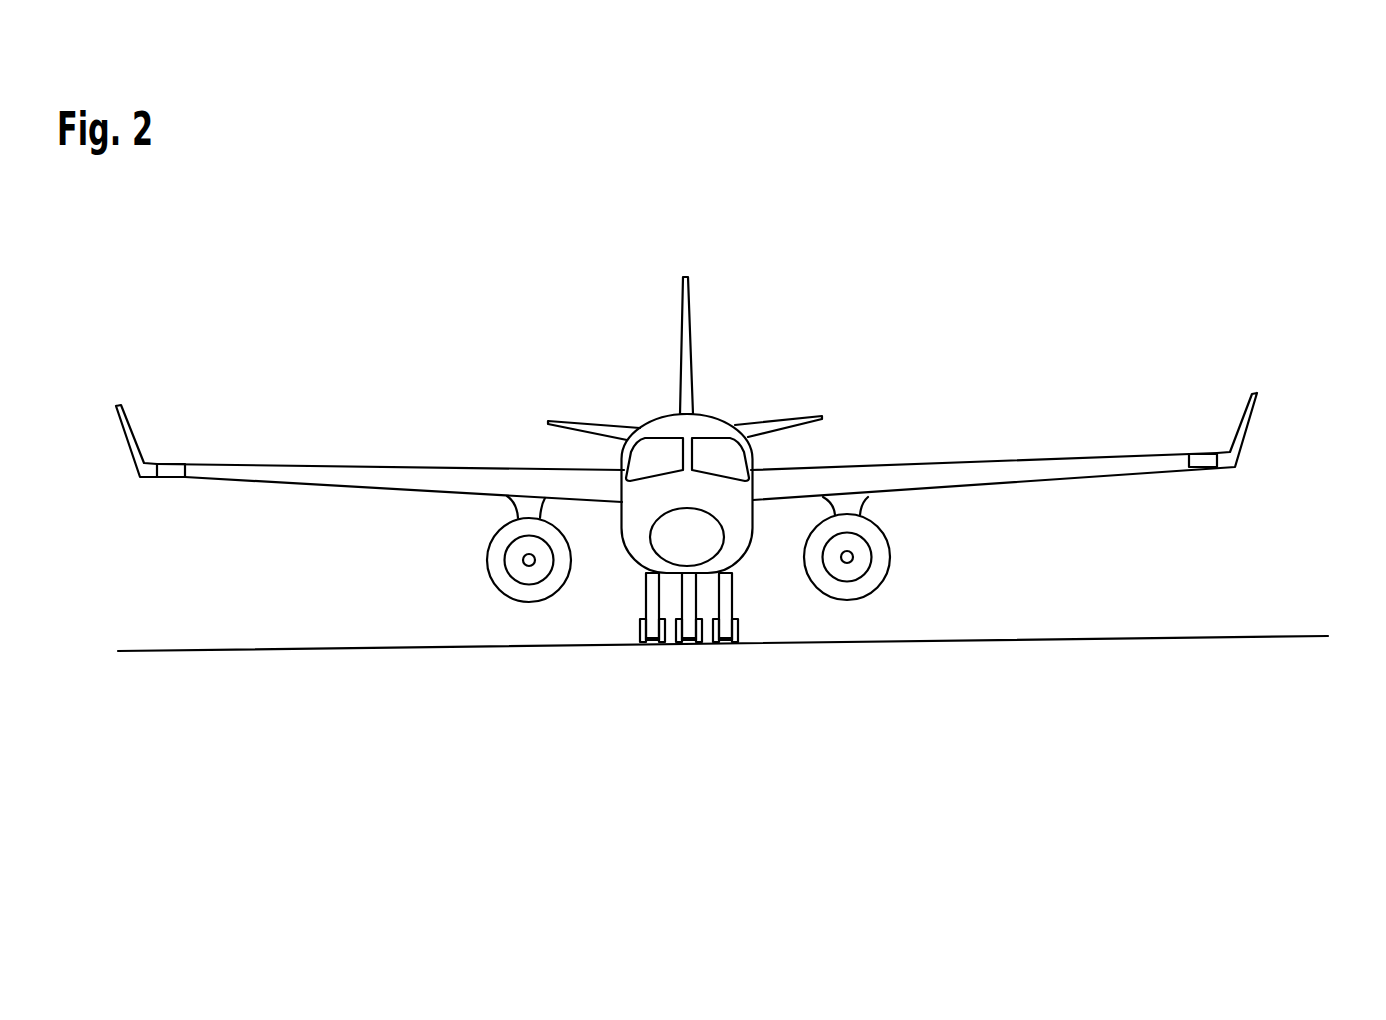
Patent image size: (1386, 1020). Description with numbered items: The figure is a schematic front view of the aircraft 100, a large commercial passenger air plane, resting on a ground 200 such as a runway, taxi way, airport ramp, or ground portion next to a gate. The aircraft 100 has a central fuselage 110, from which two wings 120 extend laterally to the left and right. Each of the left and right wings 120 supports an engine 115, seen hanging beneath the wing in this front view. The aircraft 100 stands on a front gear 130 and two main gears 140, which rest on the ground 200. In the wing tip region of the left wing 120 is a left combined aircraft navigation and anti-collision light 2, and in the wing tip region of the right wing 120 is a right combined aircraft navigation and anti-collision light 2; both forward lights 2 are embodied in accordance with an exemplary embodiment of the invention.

The aircraft 100 is at (732, 489).
The fuselage 110 is at (730, 404).
The engine 115 is at (483, 559).
The wings 120 is at (344, 478).
The combined aircraft navigation and anti-collision light 2 is at (170, 464).
The front gear 130 is at (689, 644).
The main gears 140 is at (649, 662).
The ground 200 is at (289, 648).